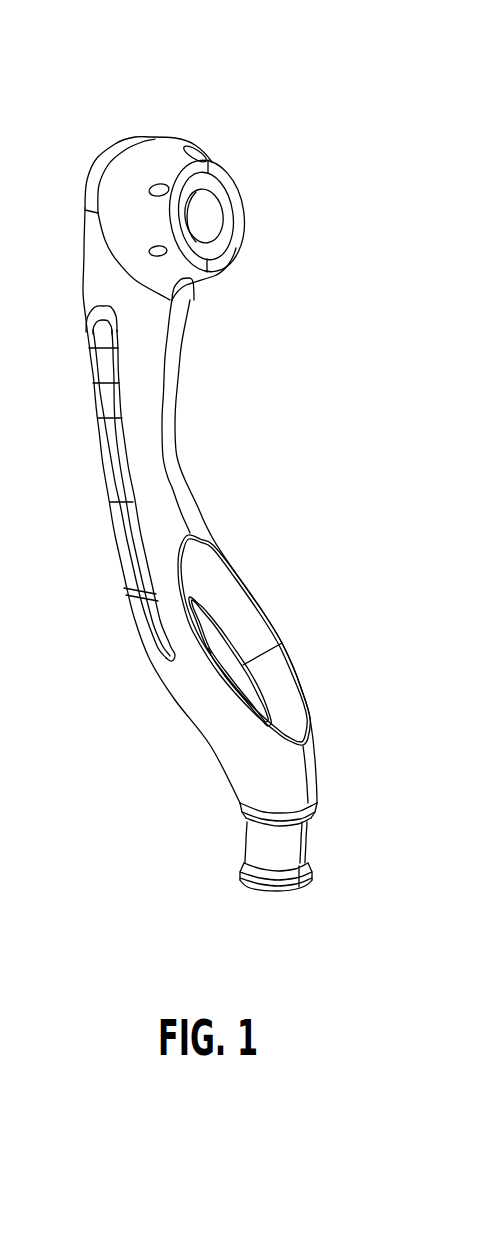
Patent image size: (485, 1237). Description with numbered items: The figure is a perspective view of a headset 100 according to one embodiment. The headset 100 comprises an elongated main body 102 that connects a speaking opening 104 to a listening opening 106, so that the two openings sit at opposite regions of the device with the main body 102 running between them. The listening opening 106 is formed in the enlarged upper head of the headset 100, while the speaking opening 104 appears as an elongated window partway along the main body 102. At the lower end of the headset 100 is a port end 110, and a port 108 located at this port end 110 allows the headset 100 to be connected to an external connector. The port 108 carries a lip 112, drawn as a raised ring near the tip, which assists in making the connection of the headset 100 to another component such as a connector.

The headset 100 is at (303, 98).
The main body 102 is at (186, 463).
The speaking opening 104 is at (262, 606).
The listening opening 106 is at (243, 212).
The port 108 is at (284, 889).
The port end 110 is at (326, 833).
The lip 112 is at (310, 873).